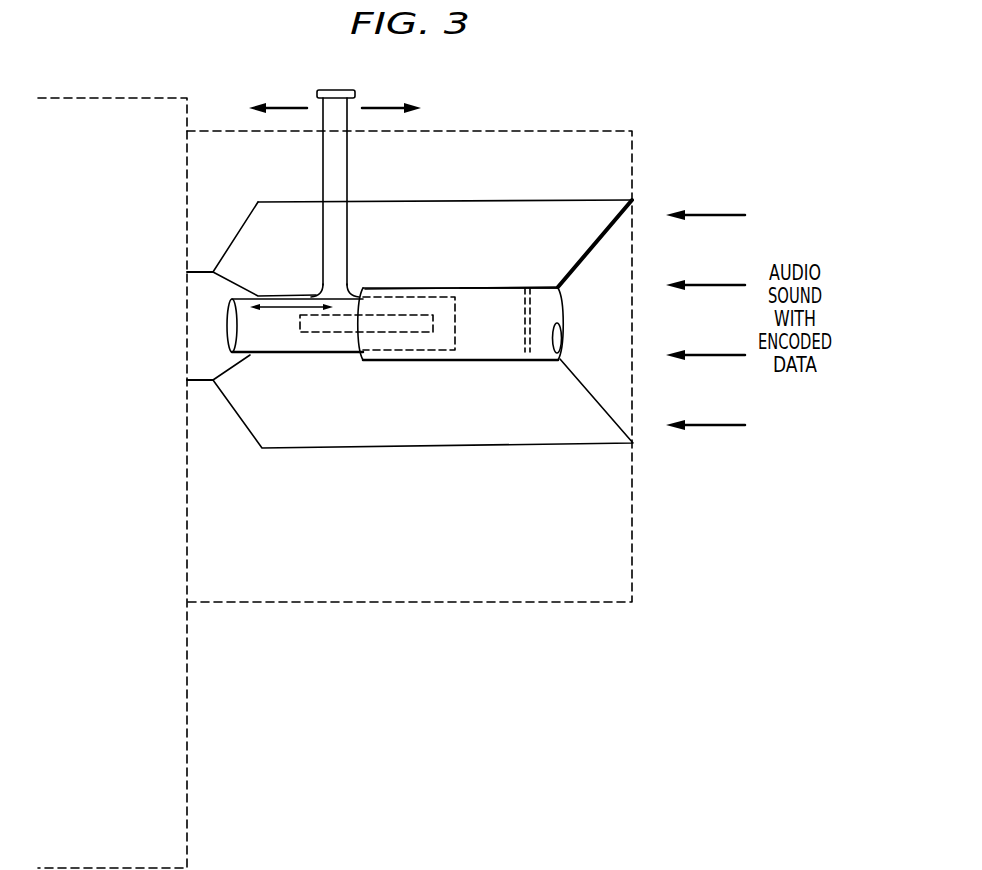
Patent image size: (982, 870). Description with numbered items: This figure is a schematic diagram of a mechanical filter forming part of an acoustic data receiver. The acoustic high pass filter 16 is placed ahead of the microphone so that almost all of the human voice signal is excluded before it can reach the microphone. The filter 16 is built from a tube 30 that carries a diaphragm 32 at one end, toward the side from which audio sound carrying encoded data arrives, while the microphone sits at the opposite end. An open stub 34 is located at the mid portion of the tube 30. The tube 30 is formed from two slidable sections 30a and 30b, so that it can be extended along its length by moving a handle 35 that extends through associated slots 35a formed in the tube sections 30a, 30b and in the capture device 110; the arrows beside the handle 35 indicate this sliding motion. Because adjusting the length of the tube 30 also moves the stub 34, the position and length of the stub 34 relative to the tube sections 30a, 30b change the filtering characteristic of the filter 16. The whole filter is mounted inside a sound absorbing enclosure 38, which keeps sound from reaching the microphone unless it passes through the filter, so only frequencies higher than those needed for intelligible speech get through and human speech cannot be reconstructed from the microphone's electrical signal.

The acoustic high pass filter 16 is at (537, 200).
The tube 30 is at (361, 254).
The slidable tube section 30a is at (497, 287).
The slidable tube section 30b is at (318, 293).
The diaphragm 32 is at (525, 347).
The open stub 34 is at (348, 365).
The handle 35 is at (333, 168).
The slots 35a is at (363, 146).
The sound absorbing enclosure 38 is at (520, 448).
The capture device 110 is at (187, 680).